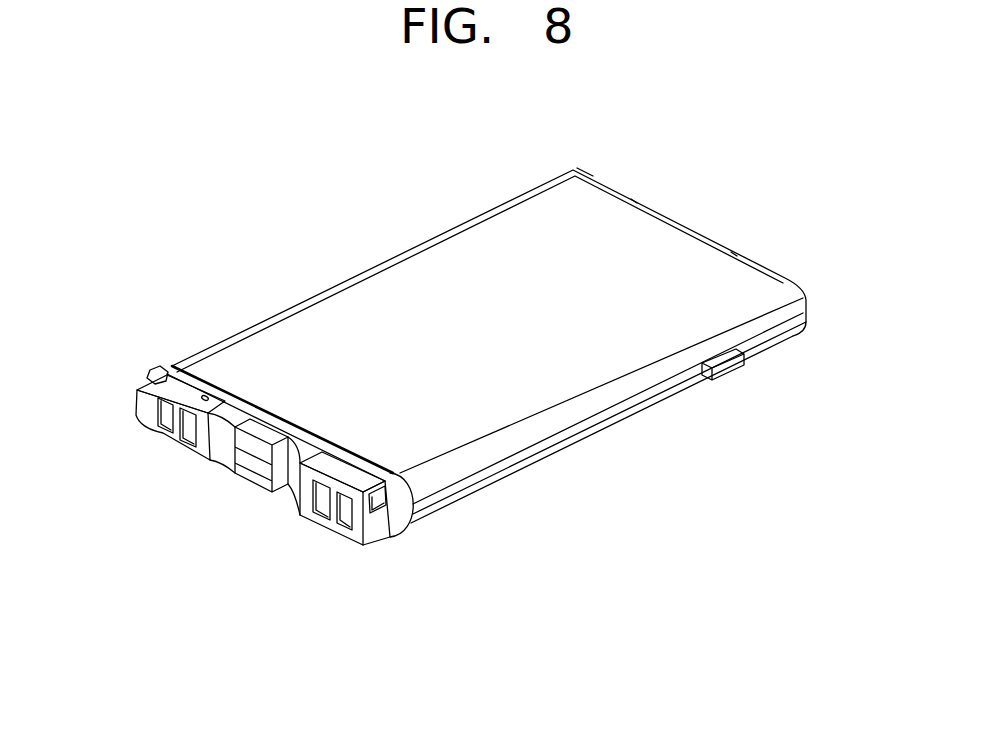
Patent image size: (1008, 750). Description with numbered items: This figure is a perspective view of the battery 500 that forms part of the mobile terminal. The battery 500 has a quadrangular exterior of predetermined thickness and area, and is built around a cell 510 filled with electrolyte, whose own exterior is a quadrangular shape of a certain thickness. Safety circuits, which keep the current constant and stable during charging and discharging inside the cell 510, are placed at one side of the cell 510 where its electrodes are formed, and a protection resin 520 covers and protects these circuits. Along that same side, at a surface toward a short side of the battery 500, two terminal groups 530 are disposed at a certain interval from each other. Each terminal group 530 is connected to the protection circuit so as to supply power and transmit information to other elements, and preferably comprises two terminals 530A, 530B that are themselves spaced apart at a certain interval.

The battery 500 is at (461, 212).
The cell 510 is at (400, 272).
The protection resin 520 is at (158, 376).
The terminal group 530 is at (121, 518).
The terminal 530A is at (161, 432).
The terminal 530B is at (188, 447).